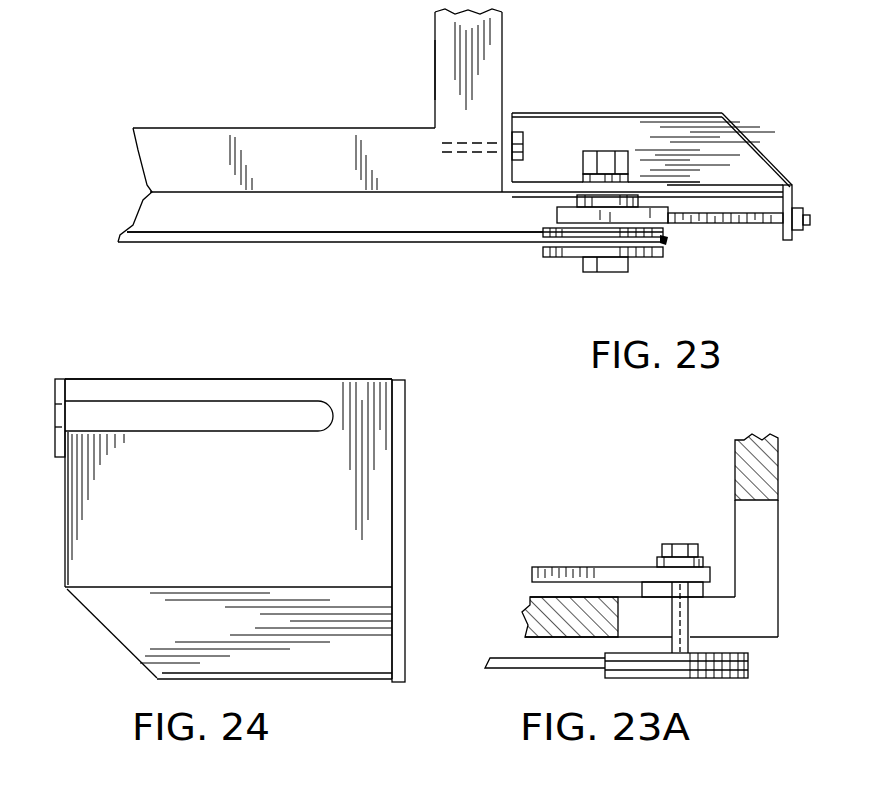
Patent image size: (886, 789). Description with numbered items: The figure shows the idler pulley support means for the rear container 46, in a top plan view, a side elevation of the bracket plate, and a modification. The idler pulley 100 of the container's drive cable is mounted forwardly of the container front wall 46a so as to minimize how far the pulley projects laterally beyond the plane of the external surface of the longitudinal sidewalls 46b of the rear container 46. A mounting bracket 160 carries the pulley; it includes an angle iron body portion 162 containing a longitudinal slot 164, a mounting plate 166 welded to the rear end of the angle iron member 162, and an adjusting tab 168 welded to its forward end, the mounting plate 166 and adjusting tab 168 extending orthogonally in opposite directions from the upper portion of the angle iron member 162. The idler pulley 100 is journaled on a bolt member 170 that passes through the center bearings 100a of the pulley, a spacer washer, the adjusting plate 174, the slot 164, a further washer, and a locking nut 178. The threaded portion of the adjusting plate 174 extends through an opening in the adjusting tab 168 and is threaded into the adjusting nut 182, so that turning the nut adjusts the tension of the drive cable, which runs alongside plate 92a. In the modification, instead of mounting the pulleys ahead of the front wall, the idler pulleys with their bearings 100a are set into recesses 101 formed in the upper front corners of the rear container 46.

In FIG. 23, the rear container 46 is at (322, 122).
In FIG. 23A, the rear container 46 is at (786, 562).
In FIG. 23, the container front wall 46a is at (486, 42).
In FIG. 23A, the container front wall 46a is at (762, 478).
In FIG. 23, the longitudinal sidewalls 46b is at (212, 177).
In FIG. 23A, the longitudinal sidewalls 46b is at (568, 612).
In FIG. 23, the plate 92a is at (367, 240).
In FIG. 23, the idler pulley 100 is at (563, 248).
In FIG. 23A, the center bearings 100a is at (740, 680).
In FIG. 23A, the recesses 101 is at (748, 538).
In FIG. 23, the mounting bracket 160 is at (672, 106).
In FIG. 24, the mounting bracket 160 is at (186, 372).
In FIG. 23, the angle iron body portion 162 is at (703, 192).
In FIG. 24, the angle iron body portion 162 is at (257, 523).
In FIG. 24, the longitudinal slot 164 is at (290, 418).
In FIG. 23, the mounting plate 166 is at (507, 133).
In FIG. 24, the mounting plate 166 is at (400, 455).
In FIG. 23, the adjusting tab 168 is at (793, 196).
In FIG. 24, the adjusting tab 168 is at (58, 400).
In FIG. 23, the bolt member 170 is at (610, 273).
In FIG. 23, the adjusting plate 174 is at (645, 213).
In FIG. 23, the locking nut 178 is at (612, 158).
In FIG. 23, the adjusting nut 182 is at (800, 233).